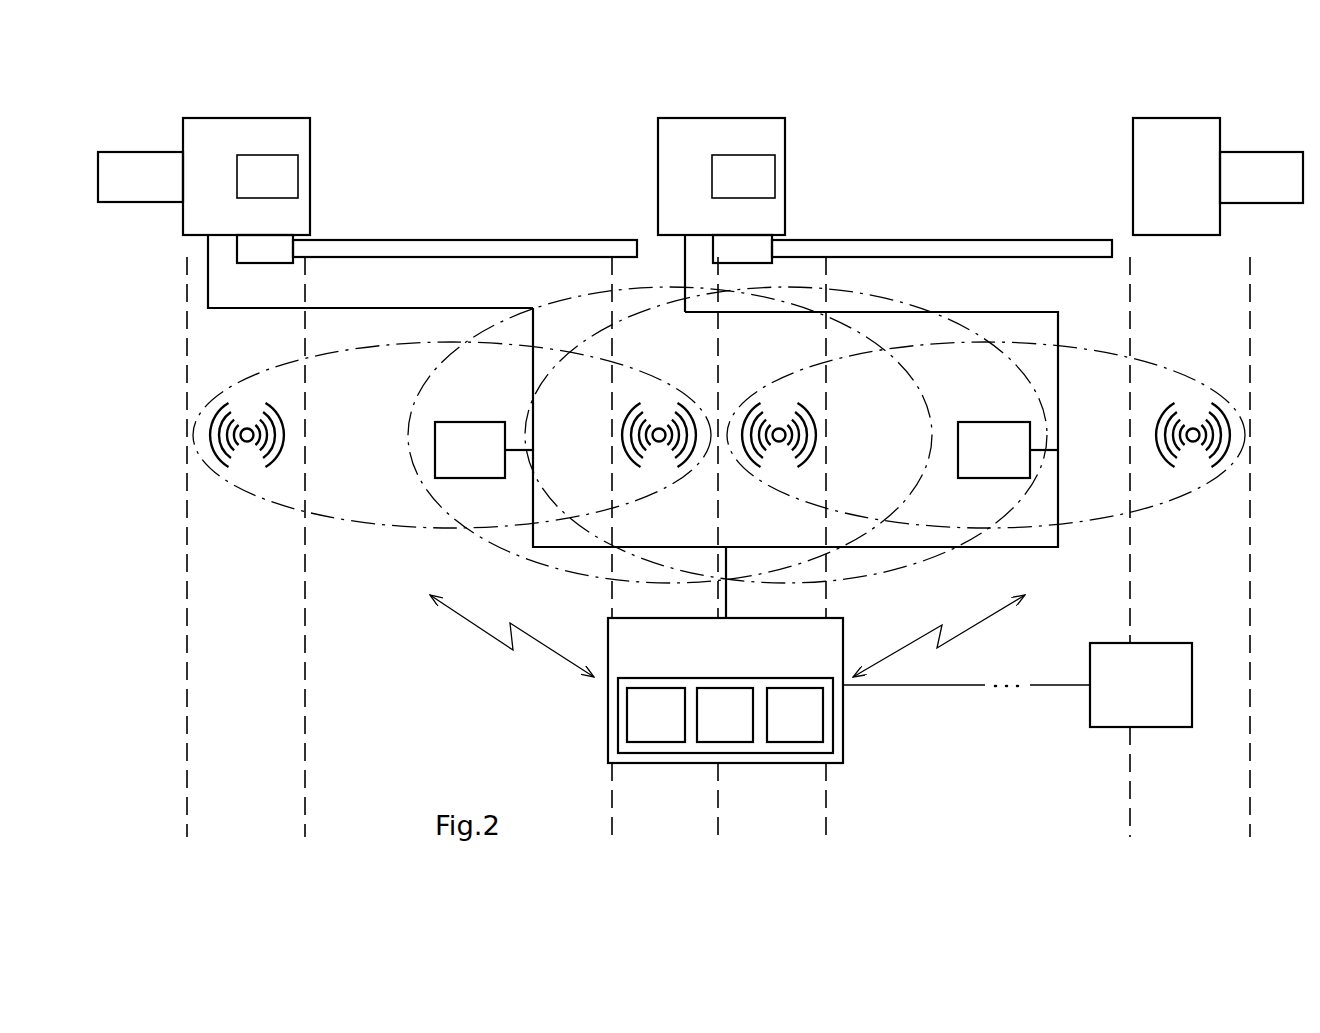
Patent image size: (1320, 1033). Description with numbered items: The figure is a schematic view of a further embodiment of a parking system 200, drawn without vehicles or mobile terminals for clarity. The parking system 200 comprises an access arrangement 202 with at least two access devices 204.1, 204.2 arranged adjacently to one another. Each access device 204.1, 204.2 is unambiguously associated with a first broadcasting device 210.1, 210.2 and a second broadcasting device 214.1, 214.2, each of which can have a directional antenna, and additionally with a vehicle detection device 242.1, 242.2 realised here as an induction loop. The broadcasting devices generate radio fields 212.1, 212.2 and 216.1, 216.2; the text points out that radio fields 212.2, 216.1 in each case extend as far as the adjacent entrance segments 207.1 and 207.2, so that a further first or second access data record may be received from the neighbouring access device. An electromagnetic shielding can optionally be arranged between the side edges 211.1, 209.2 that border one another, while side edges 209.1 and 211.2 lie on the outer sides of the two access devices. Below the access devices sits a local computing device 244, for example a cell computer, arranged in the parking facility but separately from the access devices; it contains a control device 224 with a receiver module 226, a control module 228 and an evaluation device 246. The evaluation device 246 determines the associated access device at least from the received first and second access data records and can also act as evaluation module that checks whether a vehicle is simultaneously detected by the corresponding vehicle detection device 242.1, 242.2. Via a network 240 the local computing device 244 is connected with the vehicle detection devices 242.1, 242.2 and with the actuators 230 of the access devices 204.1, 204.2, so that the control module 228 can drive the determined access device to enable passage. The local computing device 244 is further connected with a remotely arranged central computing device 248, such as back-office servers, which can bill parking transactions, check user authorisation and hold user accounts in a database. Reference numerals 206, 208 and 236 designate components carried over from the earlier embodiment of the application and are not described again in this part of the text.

The parking system 200 is at (1240, 95).
The access arrangement 202 is at (1130, 95).
The access device 204.1 is at (435, 163).
The access device 204.2 is at (997, 163).
The boundary line 206 is at (165, 559).
The entrance segment 207.1 is at (367, 782).
The entrance segment 207.2 is at (1010, 782).
The transport device 208 is at (182, 94).
The first transfer zone 209.1 is at (241, 782).
The side edge 209.2 is at (775, 782).
The first broadcasting device 210.1 is at (292, 420).
The first broadcasting device 210.2 is at (827, 423).
The side edge 211.1 is at (665, 782).
The second reading zone 211.2 is at (1192, 782).
The first detection range 212.1 is at (362, 525).
The radio field 212.2 is at (895, 572).
The second broadcasting device 214.1 is at (615, 415).
The second broadcasting device 214.2 is at (1147, 415).
The radio field 216.1 is at (567, 572).
The fourth detection range 216.2 is at (1172, 500).
The control device 224 is at (665, 677).
The receiver module 226 is at (675, 726).
The control module 228 is at (743, 726).
The actuator 230 is at (285, 191).
The wireless communication link 236 is at (477, 627).
The network 240 is at (1016, 312).
The vehicle detection device 242.1 is at (470, 422).
The vehicle detection device 242.2 is at (995, 422).
The local computing device 244 is at (745, 652).
The evaluation device 246 is at (813, 726).
The central computing device 248 is at (1160, 697).